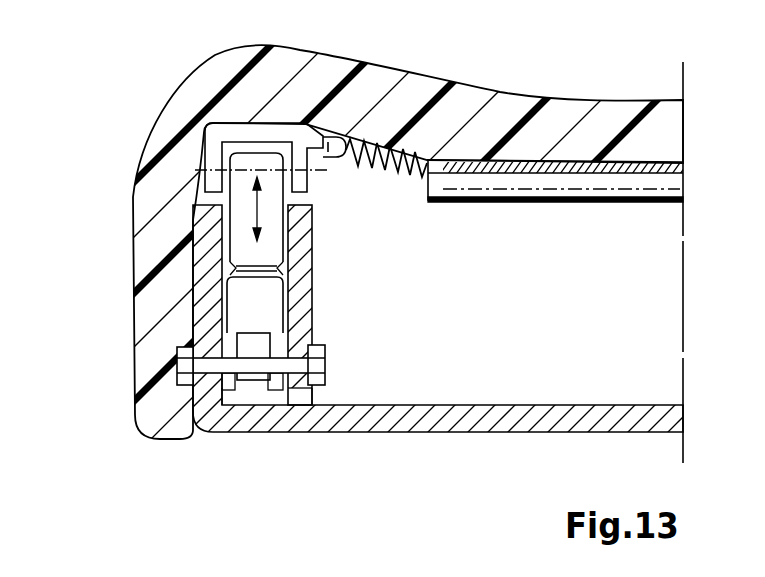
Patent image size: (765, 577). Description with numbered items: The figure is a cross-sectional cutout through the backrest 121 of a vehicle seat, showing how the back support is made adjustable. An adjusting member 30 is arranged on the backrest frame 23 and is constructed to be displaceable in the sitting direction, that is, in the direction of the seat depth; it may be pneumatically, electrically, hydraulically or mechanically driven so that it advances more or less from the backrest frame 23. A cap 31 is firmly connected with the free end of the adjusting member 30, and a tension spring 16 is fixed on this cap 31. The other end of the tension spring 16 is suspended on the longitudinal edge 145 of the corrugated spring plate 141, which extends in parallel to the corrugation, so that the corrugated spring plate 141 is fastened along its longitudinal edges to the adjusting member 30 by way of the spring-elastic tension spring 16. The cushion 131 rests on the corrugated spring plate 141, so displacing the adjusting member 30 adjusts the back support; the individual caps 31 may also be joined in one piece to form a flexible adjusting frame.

The cushion 131 is at (402, 100).
The cap 31 is at (224, 134).
The longitudinal edge 145 is at (418, 183).
The tension spring 16 is at (380, 175).
The corrugated spring plate 141 is at (580, 180).
The backrest 121 is at (638, 200).
The adjusting member 30 is at (253, 298).
The backrest frame 23 is at (462, 417).